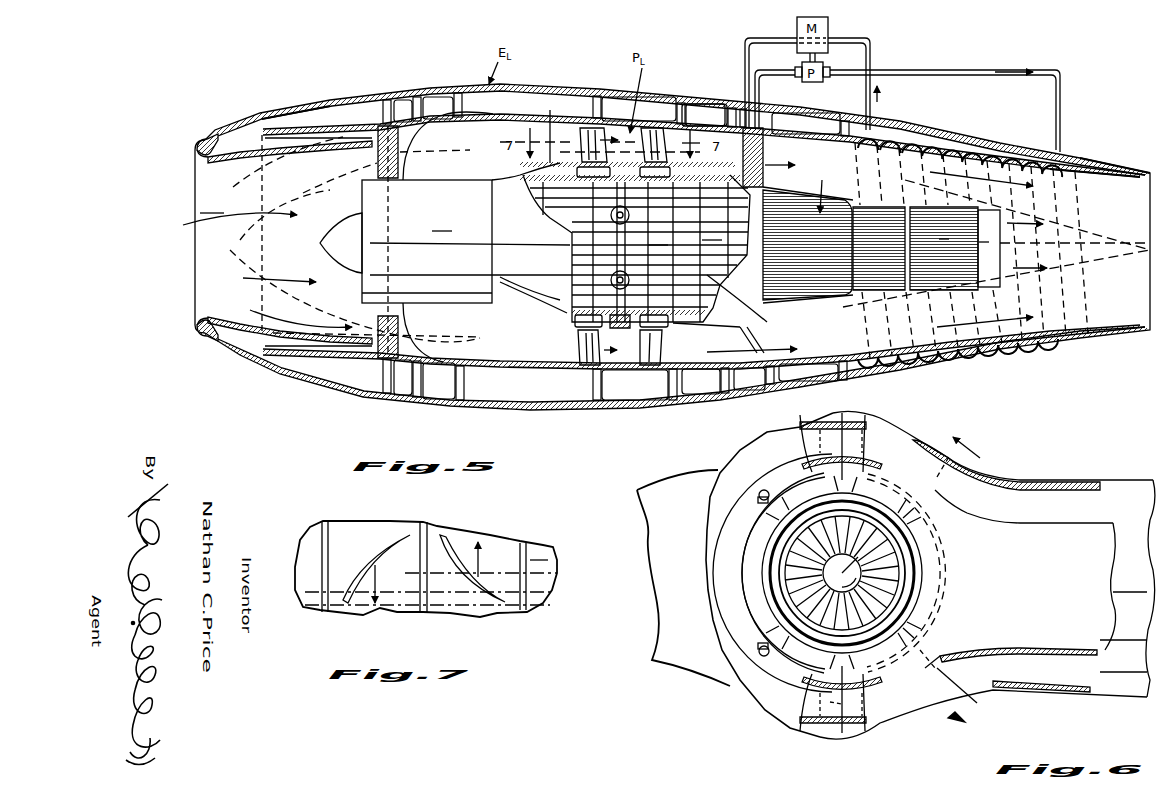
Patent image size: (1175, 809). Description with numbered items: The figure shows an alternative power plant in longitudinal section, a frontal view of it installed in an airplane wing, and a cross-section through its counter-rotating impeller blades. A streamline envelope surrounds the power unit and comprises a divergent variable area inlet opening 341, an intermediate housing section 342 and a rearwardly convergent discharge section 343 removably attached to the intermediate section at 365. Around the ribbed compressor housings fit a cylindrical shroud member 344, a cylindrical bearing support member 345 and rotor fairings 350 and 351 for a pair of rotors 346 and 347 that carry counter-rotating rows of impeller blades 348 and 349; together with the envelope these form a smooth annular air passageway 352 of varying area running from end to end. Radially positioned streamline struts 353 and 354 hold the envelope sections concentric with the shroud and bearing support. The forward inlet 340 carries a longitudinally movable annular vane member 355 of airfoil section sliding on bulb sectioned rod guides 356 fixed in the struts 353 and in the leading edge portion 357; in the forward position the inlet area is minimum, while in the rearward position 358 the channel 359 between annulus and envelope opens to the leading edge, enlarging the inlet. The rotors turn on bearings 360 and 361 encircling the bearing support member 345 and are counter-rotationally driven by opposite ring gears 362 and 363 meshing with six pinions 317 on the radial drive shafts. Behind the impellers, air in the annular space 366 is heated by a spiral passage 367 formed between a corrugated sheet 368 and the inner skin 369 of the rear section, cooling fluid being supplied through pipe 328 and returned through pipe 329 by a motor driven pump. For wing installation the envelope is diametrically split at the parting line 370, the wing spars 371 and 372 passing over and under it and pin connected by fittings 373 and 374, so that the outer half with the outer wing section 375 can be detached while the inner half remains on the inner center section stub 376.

In FIG. 5, the pinion 317 is at (630, 216).
In FIG. 5, the pipe 328 is at (944, 67).
In FIG. 5, the pipe 329 is at (871, 50).
In FIG. 5, the forward inlet 340 is at (207, 268).
In FIG. 5, the variable area inlet opening 341 is at (219, 126).
In FIG. 6, the variable area inlet opening 341 is at (780, 682).
In FIG. 5, the intermediate housing section 342 is at (617, 88).
In FIG. 6, the intermediate housing section 342 is at (727, 480).
In FIG. 5, the rearwardly convergent discharge section 343 is at (1077, 140).
In FIG. 5, the cylindrical shroud member 344 is at (459, 190).
In FIG. 5, the cylindrical bearing support member 345 is at (643, 244).
In FIG. 7, the cylindrical bearing support member 345 is at (345, 535).
In FIG. 5, the rotor 346 is at (576, 330).
In FIG. 5, the rotor 347 is at (668, 331).
In FIG. 7, the rotor 347 is at (506, 545).
In FIG. 5, the impeller blades 348 is at (596, 360).
In FIG. 6, the impeller blades 348 is at (941, 573).
In FIG. 7, the impeller blades 348 is at (378, 545).
In FIG. 5, the impeller blades 349 is at (653, 362).
In FIG. 7, the impeller blades 349 is at (452, 545).
In FIG. 5, the rotor fairing 350 is at (548, 129).
In FIG. 6, the rotor fairing 350 is at (945, 570).
In FIG. 7, the rotor fairing 350 is at (318, 540).
In FIG. 5, the rotor fairing 351 is at (703, 114).
In FIG. 7, the rotor fairing 351 is at (550, 560).
In FIG. 5, the annular air passageway 352 is at (552, 363).
In FIG. 5, the streamline strut 353 is at (377, 133).
In FIG. 6, the streamline strut 353 is at (760, 547).
In FIG. 5, the streamline strut 354 is at (762, 145).
In FIG. 5, the annular vane member 355 is at (196, 148).
In FIG. 6, the annular vane member 355 is at (752, 636).
In FIG. 5, the rod guide 356 is at (277, 141).
In FIG. 6, the rod guide 356 is at (765, 490).
In FIG. 5, the leading edge portion 357 is at (240, 128).
In FIG. 5, the rearward position of annulus 358 is at (293, 160).
In FIG. 5, the channel 359 is at (303, 113).
In FIG. 5, the bearing 360 is at (581, 128).
In FIG. 5, the bearing 361 is at (660, 128).
In FIG. 5, the ring gear 362 is at (611, 330).
In FIG. 5, the ring gear 363 is at (633, 313).
In FIG. 5, the attachment point 365 is at (853, 114).
In FIG. 5, the annular space 366 is at (916, 179).
In FIG. 5, the spiral passage 367 is at (890, 133).
In FIG. 5, the corrugated sheet 368 is at (915, 128).
In FIG. 5, the inner skin 369 is at (1077, 167).
In FIG. 6, the parting line 370 is at (844, 416).
In FIG. 6, the wing spar 371 is at (1022, 524).
In FIG. 6, the wing spar 372 is at (1030, 647).
In FIG. 6, the fitting 373 is at (828, 422).
In FIG. 6, the fitting 374 is at (838, 707).
In FIG. 5, the outer wing section 375 is at (1092, 233).
In FIG. 6, the outer wing section 375 is at (677, 613).
In FIG. 6, the inner center section stub 376 is at (1113, 480).